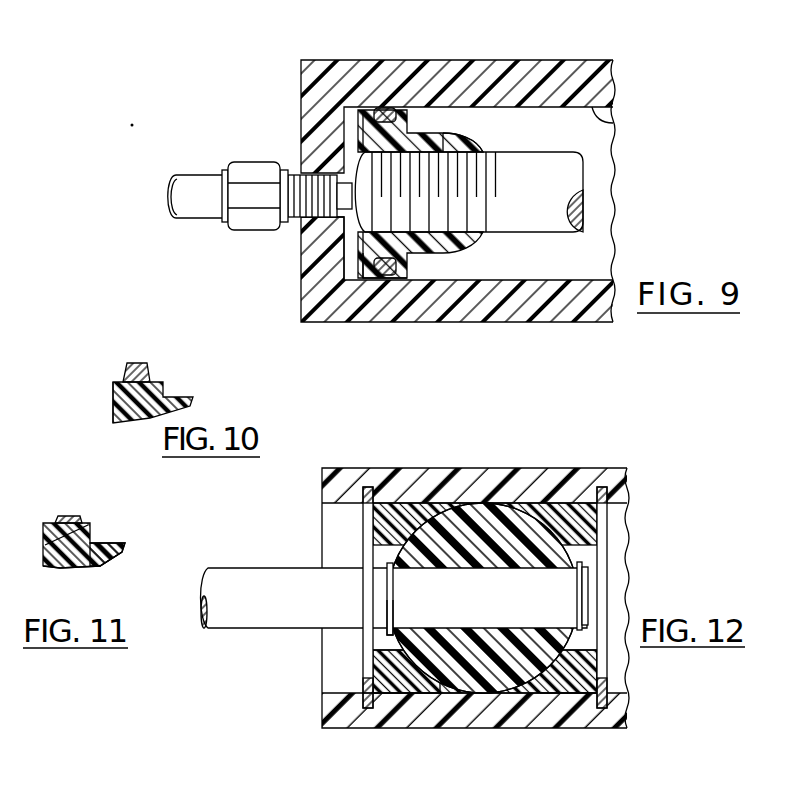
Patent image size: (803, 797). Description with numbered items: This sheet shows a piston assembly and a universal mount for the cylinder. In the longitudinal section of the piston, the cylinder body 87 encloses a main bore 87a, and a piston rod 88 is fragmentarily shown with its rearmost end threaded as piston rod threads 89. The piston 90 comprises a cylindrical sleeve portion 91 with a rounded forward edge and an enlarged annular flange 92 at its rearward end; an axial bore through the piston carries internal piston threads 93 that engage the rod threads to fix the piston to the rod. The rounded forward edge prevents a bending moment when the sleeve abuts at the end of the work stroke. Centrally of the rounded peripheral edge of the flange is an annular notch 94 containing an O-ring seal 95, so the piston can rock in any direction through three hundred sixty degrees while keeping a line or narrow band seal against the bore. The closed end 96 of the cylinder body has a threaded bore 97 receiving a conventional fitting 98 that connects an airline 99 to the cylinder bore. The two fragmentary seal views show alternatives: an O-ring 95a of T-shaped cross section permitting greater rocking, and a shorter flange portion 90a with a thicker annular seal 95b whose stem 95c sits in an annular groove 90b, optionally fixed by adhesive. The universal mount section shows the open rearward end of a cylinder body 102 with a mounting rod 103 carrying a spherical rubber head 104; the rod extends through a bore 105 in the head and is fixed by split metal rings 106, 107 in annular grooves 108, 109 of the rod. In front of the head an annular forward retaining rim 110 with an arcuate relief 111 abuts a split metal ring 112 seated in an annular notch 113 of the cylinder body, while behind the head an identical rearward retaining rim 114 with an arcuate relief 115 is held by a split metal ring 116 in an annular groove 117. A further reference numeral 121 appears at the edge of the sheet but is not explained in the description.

In FIG. 9, the cylinder body 87 is at (578, 65).
In FIG. 9, the main bore 87a is at (612, 112).
In FIG. 9, the piston rod 88 is at (566, 183).
In FIG. 9, the piston rod threads 89 is at (503, 173).
In FIG. 9, the piston 90 is at (427, 122).
In FIG. 10, the piston 90 is at (153, 391).
In FIG. 9, the cylindrical sleeve portion 91 is at (443, 143).
In FIG. 9, the enlarged annular flange 92 is at (367, 133).
In FIG. 9, the piston threads 93 is at (472, 147).
In FIG. 9, the annular notch 94 is at (362, 268).
In FIG. 10, the annular notch 94 is at (113, 385).
In FIG. 9, the O-ring seal 95 is at (391, 280).
In FIG. 10, the O-ring of T-shaped cross section 95a is at (137, 367).
In FIG. 11, the annular seal 95b is at (72, 530).
In FIG. 11, the stem 95c is at (73, 522).
In FIG. 11, the flange portion 90a is at (90, 545).
In FIG. 11, the annular groove 90b is at (73, 572).
In FIG. 9, the closed end 96 is at (318, 272).
In FIG. 9, the threaded bore 97 is at (310, 175).
In FIG. 9, the fitting 98 is at (253, 165).
In FIG. 9, the airline 99 is at (195, 185).
In FIG. 12, the cylinder body 102 is at (583, 470).
In FIG. 12, the mounting rod 103 is at (251, 618).
In FIG. 12, the spherical rubber head 104 is at (510, 690).
In FIG. 12, the bore 105 is at (470, 570).
In FIG. 12, the split metal ring 106 is at (585, 578).
In FIG. 12, the split metal ring 107 is at (393, 583).
In FIG. 12, the annular groove 108 is at (585, 615).
In FIG. 12, the annular groove 109 is at (393, 614).
In FIG. 12, the forward retaining rim 110 is at (577, 690).
In FIG. 12, the arcuate relief 111 is at (565, 503).
In FIG. 12, the split metal ring 112 is at (607, 684).
In FIG. 12, the annular notch 113 is at (608, 488).
In FIG. 12, the rearward retaining rim 114 is at (403, 682).
In FIG. 12, the arcuate relief 115 is at (413, 503).
In FIG. 12, the split metal ring 116 is at (367, 683).
In FIG. 12, the annular groove 117 is at (365, 487).
In FIG. 12, the reference numeral 121 is at (372, 791).